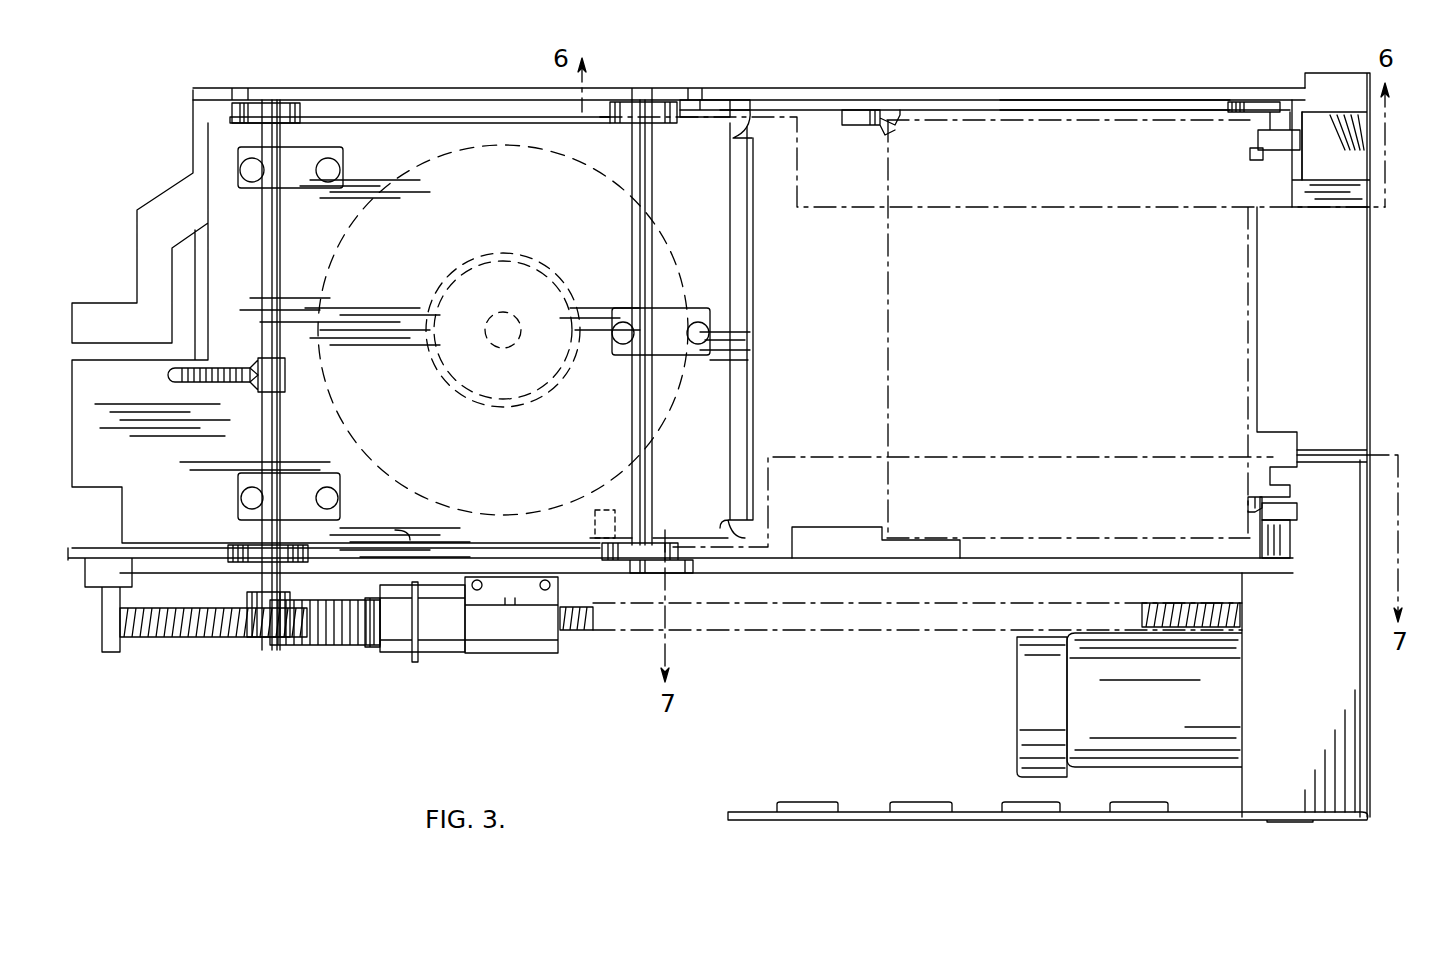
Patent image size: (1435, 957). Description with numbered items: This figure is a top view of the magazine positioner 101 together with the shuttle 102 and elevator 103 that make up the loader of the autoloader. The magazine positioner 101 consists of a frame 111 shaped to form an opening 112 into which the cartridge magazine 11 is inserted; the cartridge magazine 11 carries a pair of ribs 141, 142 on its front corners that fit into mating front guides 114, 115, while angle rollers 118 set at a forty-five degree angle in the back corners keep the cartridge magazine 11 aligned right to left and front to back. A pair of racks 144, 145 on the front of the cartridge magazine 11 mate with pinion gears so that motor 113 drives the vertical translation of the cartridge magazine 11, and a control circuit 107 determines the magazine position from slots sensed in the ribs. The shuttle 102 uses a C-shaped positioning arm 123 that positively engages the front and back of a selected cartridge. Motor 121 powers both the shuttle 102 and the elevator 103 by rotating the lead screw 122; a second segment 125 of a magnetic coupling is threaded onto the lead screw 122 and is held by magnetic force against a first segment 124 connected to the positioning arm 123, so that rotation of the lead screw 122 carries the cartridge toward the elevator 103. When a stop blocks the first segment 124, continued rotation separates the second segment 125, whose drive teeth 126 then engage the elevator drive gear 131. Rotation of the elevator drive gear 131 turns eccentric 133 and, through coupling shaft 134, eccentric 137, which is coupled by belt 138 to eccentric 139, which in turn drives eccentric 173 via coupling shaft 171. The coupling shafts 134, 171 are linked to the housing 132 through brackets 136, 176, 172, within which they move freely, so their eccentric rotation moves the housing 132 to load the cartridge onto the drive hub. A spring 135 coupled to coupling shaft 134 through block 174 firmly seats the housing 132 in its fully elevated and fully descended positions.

The cartridge magazine 11 is at (887, 385).
The magazine positioner 101 is at (1360, 352).
The shuttle 102 is at (535, 643).
The elevator 103 is at (513, 209).
The control circuit 107 is at (933, 818).
The frame 111 is at (1110, 107).
The opening 112 is at (1025, 117).
The motor 113 is at (1035, 707).
The front guide 114 is at (1290, 140).
The front guide 115 is at (1287, 527).
The angle rollers 118 is at (900, 112).
The motor 121 is at (1165, 719).
The lead screw 122 is at (865, 625).
The positioning arm 123 is at (595, 525).
The first segment 124 is at (450, 642).
The second segment 125 is at (395, 648).
The drive teeth 126 is at (340, 645).
The elevator drive gear 131 is at (253, 637).
The housing 132 is at (740, 128).
The eccentric 133 is at (237, 545).
The coupling shaft 134 is at (272, 443).
The spring 135 is at (207, 378).
The bracket 136 is at (342, 477).
The eccentric 137 is at (293, 103).
The belt 138 is at (450, 112).
The eccentric 139 is at (615, 110).
The rib 141 is at (1270, 83).
The rib 142 is at (1293, 503).
The rack 144 is at (1257, 147).
The rack 145 is at (1267, 467).
The coupling shaft 171 is at (633, 452).
The bracket 172 is at (622, 357).
The eccentric 173 is at (663, 540).
The block 174 is at (287, 373).
The bracket 176 is at (345, 168).